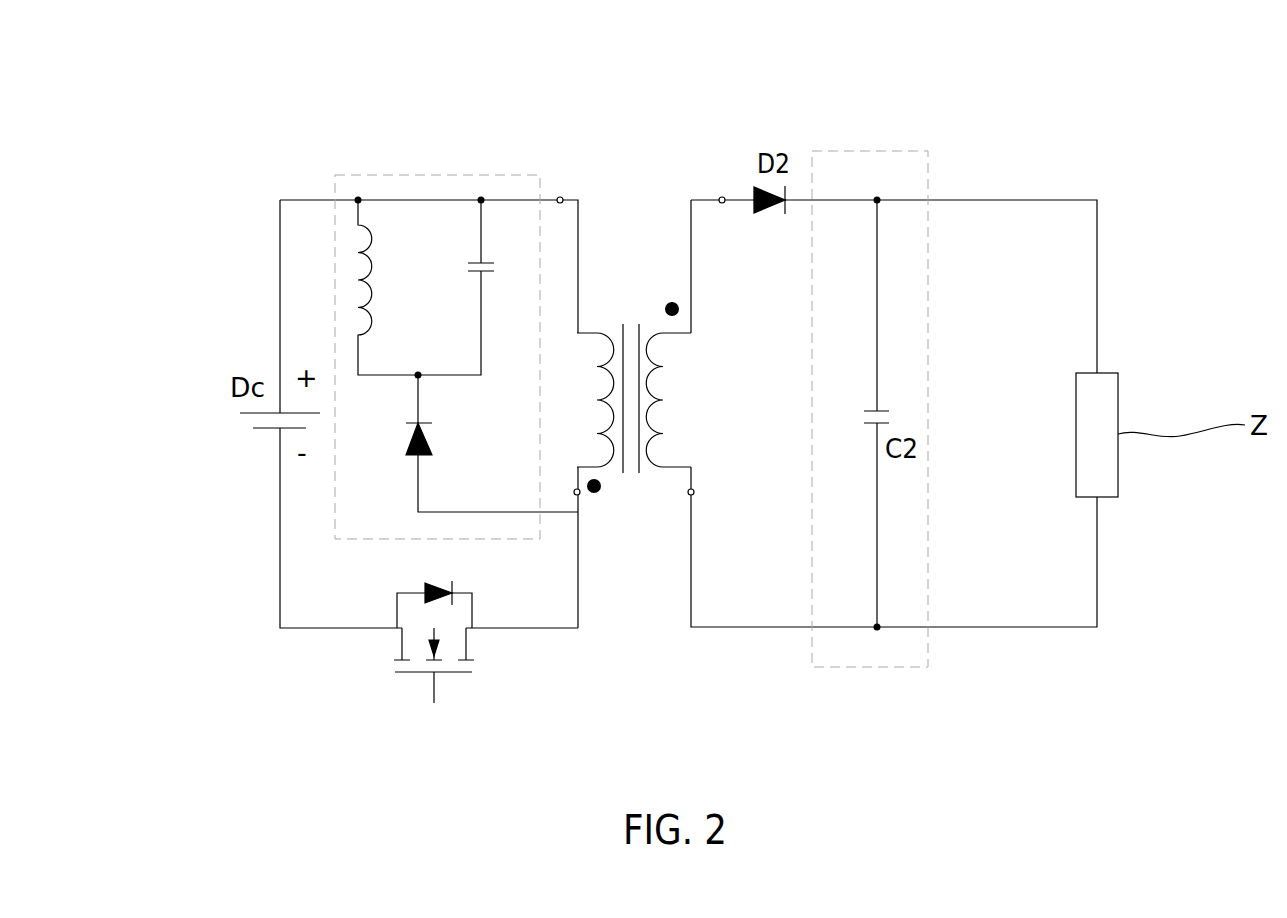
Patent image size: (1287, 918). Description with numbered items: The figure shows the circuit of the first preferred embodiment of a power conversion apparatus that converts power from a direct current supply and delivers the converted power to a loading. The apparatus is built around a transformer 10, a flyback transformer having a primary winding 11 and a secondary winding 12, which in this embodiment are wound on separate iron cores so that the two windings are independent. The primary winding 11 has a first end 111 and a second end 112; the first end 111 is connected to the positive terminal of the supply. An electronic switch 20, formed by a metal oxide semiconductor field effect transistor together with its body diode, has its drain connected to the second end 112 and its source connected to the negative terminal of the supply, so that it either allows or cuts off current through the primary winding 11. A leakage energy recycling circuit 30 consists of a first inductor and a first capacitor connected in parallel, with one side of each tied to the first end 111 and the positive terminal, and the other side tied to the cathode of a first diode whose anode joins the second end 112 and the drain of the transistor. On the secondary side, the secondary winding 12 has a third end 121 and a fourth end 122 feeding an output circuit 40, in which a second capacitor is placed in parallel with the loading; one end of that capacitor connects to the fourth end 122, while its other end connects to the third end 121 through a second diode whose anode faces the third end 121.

The transformer 10 is at (637, 272).
The primary winding 11 is at (585, 413).
The secondary winding 12 is at (677, 384).
The electronic switch 20 is at (318, 696).
The leakage energy recycling circuit 30 is at (423, 175).
The output circuit 40 is at (880, 150).
The first end 111 is at (560, 195).
The second end 112 is at (579, 494).
The third end 121 is at (722, 195).
The fourth end 122 is at (689, 494).